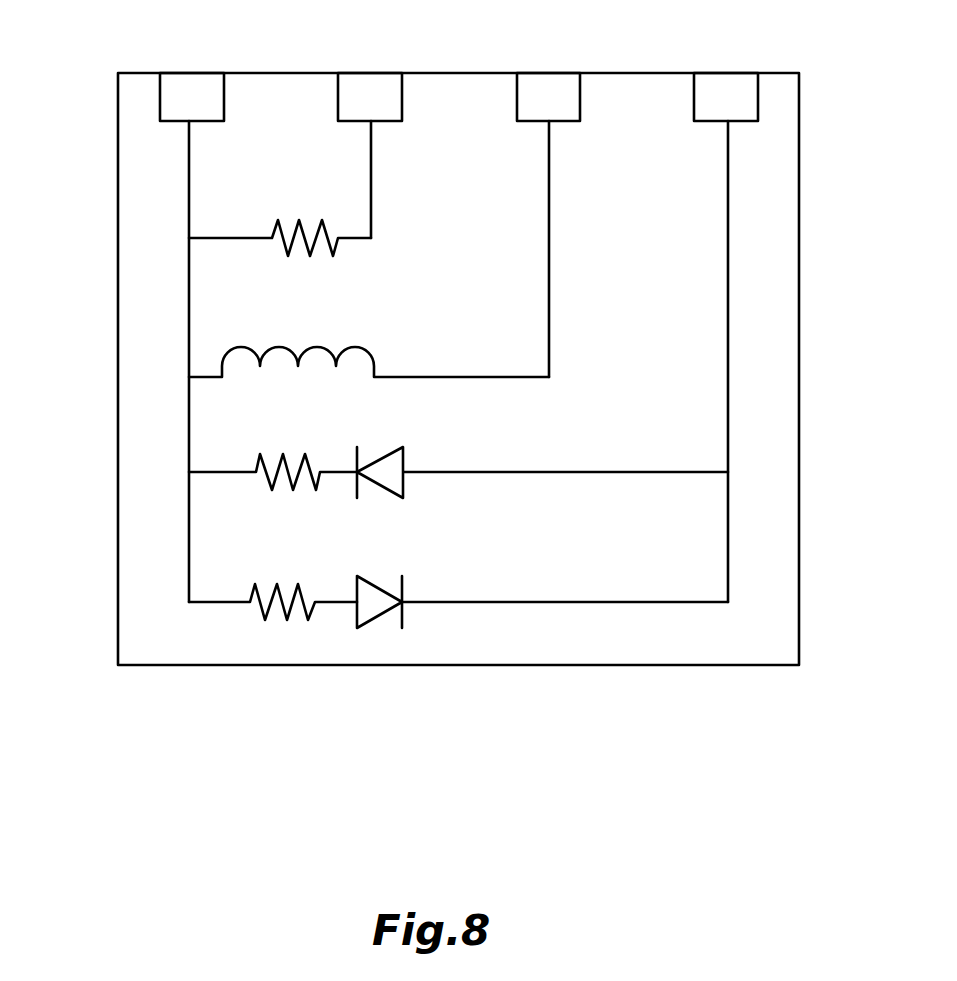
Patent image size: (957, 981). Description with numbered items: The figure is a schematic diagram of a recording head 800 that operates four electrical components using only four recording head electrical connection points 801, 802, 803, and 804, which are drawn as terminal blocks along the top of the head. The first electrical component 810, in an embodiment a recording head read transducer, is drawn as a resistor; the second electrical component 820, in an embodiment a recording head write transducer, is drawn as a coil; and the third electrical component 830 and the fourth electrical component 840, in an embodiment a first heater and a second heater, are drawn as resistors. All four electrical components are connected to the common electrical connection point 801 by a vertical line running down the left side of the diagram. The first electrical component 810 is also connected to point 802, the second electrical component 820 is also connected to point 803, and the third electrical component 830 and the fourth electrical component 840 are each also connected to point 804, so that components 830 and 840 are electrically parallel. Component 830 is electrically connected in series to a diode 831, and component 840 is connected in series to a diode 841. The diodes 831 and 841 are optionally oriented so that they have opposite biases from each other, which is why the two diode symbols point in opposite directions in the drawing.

The recording head 800 is at (667, 642).
The recording head electrical connection point 801 is at (197, 80).
The recording head electrical connection point 802 is at (368, 80).
The recording head electrical connection point 803 is at (542, 80).
The recording head electrical connection point 804 is at (713, 80).
The first electrical component 810 is at (272, 232).
The second electrical component 820 is at (222, 363).
The third electrical component 830 is at (257, 466).
The diode 831 is at (403, 495).
The fourth electrical component 840 is at (250, 596).
The diode 841 is at (383, 615).